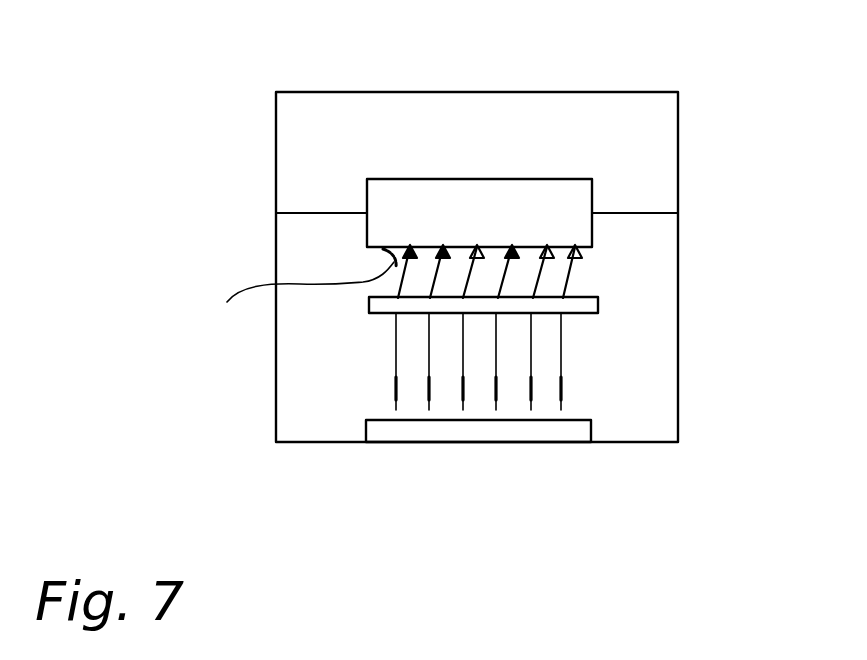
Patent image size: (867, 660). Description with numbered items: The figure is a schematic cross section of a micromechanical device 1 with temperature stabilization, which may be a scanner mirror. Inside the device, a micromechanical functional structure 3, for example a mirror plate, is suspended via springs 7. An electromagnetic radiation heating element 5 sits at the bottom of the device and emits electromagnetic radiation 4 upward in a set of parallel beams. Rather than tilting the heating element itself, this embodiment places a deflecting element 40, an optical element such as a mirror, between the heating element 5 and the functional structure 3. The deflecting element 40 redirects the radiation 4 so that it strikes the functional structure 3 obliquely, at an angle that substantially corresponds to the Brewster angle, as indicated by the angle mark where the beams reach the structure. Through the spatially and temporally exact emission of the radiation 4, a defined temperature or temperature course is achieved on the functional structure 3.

The micromechanical device 1 is at (645, 63).
The micromechanical functional structure 3 is at (580, 188).
The electromagnetic radiation 4 is at (395, 390).
The electromagnetic radiation heating element 5 is at (569, 435).
The springs 7 is at (648, 210).
The deflecting element 40 is at (598, 302).